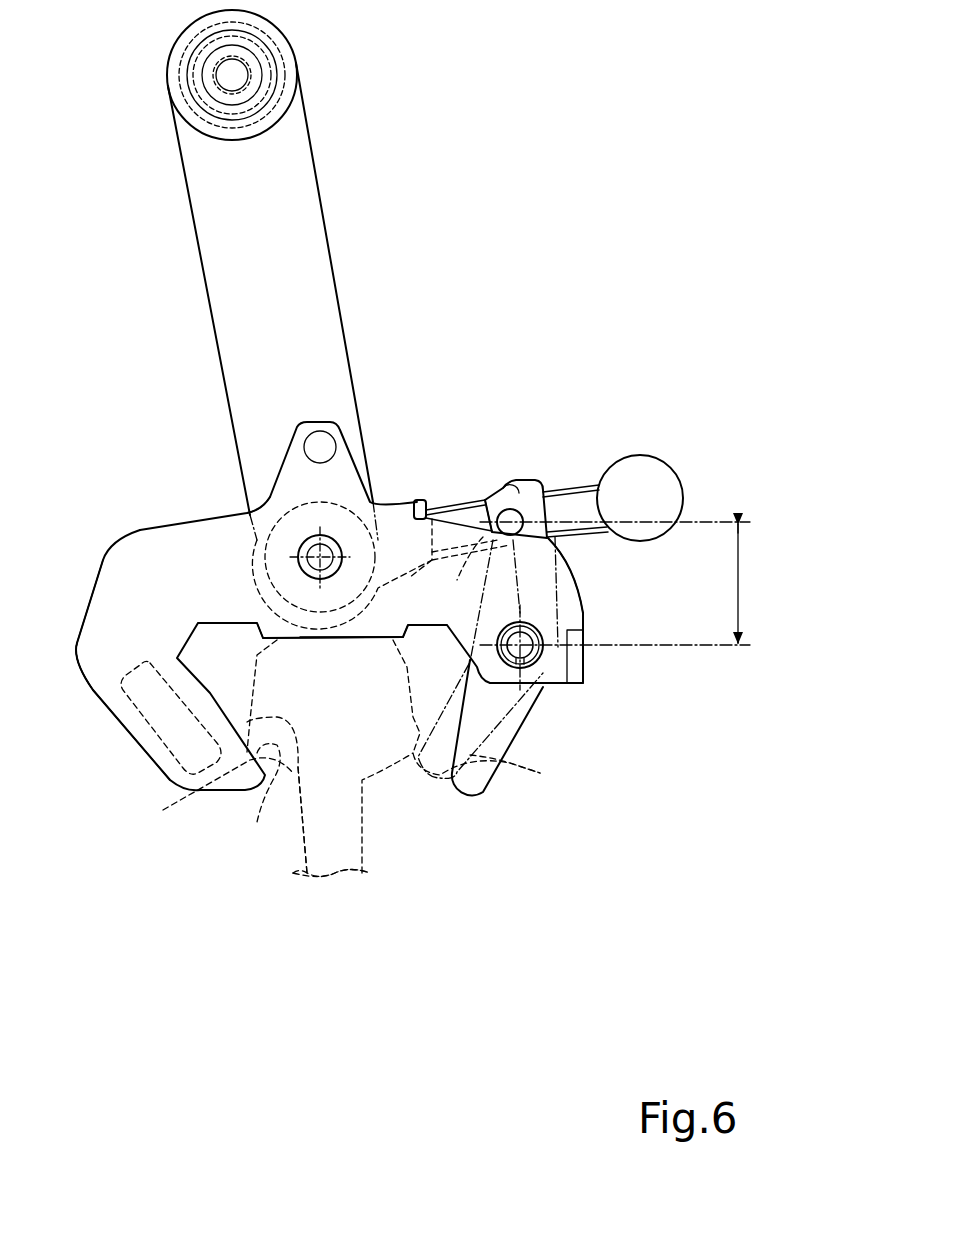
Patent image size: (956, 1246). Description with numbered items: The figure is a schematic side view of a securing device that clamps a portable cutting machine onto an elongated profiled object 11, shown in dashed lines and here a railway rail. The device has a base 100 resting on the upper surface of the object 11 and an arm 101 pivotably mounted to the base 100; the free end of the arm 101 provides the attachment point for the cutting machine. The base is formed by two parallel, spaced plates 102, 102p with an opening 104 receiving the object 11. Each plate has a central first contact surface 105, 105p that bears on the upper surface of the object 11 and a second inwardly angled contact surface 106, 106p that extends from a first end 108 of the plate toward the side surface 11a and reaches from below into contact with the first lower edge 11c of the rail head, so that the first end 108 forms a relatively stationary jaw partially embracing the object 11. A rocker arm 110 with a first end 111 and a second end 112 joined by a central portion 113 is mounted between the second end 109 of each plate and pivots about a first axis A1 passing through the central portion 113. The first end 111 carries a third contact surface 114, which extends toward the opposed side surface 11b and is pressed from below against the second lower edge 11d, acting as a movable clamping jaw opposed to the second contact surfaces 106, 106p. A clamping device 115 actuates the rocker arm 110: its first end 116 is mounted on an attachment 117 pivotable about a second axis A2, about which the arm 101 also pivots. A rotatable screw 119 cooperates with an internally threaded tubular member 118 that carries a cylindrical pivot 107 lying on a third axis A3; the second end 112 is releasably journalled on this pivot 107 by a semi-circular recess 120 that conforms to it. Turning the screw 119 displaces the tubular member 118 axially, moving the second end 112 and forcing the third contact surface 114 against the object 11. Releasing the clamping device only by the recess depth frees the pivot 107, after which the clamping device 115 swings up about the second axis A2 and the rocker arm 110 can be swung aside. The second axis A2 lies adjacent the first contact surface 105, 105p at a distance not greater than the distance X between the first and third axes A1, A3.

The arm 101 is at (326, 230).
The base 100 is at (95, 433).
The plate 102 is at (195, 545).
The plate 102p is at (225, 503).
The first end 108 is at (120, 577).
The second axis A2 is at (317, 553).
The first end of the clamping device 116 is at (393, 483).
The attachment 117 is at (423, 508).
The tubular member 118 is at (488, 503).
The pivot 107 is at (510, 512).
The semi-circular recess 120 is at (543, 487).
The second end of the rocker arm 112 is at (545, 485).
The rotatable screw 119 is at (583, 488).
The clamping device 115 is at (517, 362).
The second end of the plate 109 is at (560, 572).
The first axis A1 is at (536, 630).
The central portion 113 is at (547, 700).
The first end of the rocker arm 111 is at (490, 787).
The third contact surface 114 is at (450, 780).
The rocker arm 110 is at (627, 817).
The profiled object 11 is at (338, 763).
The side surface 11a is at (250, 722).
The opposed side surface 11b is at (420, 680).
The first lower edge 11c is at (216, 796).
The second lower edge 11d is at (528, 775).
The opening 104 is at (378, 830).
The first contact surface 105 is at (293, 642).
The first contact surface 105p is at (337, 642).
The second inwardly angled contact surface 106 is at (277, 770).
The second inwardly angled contact surface 106p is at (293, 790).
The third axis A3 is at (543, 487).
The distance X is at (718, 583).